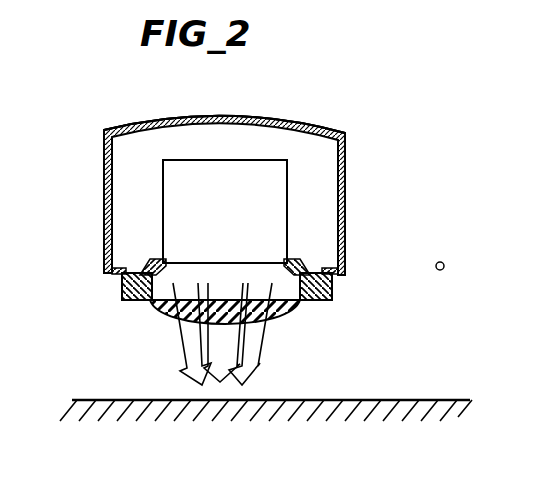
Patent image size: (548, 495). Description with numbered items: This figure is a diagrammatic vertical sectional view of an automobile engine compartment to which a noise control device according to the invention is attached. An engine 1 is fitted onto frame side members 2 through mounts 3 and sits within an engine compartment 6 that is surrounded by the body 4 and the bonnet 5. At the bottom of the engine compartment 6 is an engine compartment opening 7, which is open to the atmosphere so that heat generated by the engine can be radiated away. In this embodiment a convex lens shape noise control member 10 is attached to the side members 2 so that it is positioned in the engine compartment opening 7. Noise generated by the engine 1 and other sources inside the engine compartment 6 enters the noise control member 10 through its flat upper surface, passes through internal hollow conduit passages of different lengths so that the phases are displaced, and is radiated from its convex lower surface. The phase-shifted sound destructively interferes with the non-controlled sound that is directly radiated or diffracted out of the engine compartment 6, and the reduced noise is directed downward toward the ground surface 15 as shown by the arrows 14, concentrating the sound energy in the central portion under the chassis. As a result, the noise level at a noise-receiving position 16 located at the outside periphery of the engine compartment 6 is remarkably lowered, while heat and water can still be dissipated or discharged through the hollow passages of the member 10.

The engine 1 is at (272, 206).
The frame side members 2 is at (333, 298).
The mounts 3 is at (290, 262).
The body 4 is at (347, 192).
The bonnet 5 is at (312, 130).
The engine compartment 6 is at (346, 152).
The engine compartment opening 7 is at (296, 305).
The convex lens shape noise control member 10 is at (165, 307).
The arrows 14 is at (256, 340).
The ground surface 15 is at (376, 401).
The noise-receiving position 16 is at (445, 266).